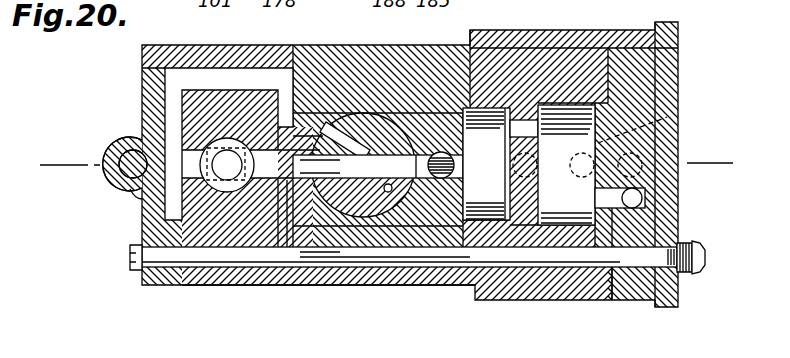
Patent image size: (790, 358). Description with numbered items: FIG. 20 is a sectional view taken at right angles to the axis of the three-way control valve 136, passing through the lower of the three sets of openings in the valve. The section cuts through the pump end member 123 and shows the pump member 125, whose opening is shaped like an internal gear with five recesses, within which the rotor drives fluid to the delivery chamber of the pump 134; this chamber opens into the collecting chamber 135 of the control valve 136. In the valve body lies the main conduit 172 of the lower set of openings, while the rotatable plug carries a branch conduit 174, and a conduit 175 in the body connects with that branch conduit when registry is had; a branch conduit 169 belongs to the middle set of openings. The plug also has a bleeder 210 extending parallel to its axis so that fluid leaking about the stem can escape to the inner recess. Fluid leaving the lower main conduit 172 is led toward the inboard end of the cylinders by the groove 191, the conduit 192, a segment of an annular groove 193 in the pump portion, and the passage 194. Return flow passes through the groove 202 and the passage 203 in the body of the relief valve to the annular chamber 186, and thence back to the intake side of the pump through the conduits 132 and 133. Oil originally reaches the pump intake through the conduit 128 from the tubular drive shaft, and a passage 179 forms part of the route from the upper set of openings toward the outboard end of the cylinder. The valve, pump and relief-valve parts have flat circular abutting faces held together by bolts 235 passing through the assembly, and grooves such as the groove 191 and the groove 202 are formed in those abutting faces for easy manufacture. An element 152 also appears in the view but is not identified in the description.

The control valve 136 is at (388, 40).
The conduit 132 is at (605, 44).
The passage 203 is at (231, 67).
The branch conduit 169 is at (547, 48).
The annular chamber 186 is at (172, 192).
The groove 191 is at (289, 182).
The groove 202 is at (285, 82).
The intermediate block 152 is at (430, 110).
The branch conduit 174 is at (348, 185).
The conduit 175 is at (318, 115).
The end member 123 is at (378, 166).
The bleeder 210 is at (390, 192).
The main conduit 172 is at (486, 164).
The passage 179 is at (485, 198).
The delivery chamber of the pump 134 is at (530, 120).
The member 125 is at (571, 103).
The segment of annular groove 193 is at (553, 177).
The passage 194 is at (667, 117).
The conduit 128 is at (655, 150).
The conduit 133 is at (642, 202).
The collecting chamber 135 is at (483, 212).
The bolts 235 is at (252, 257).
The conduit 192 is at (362, 257).